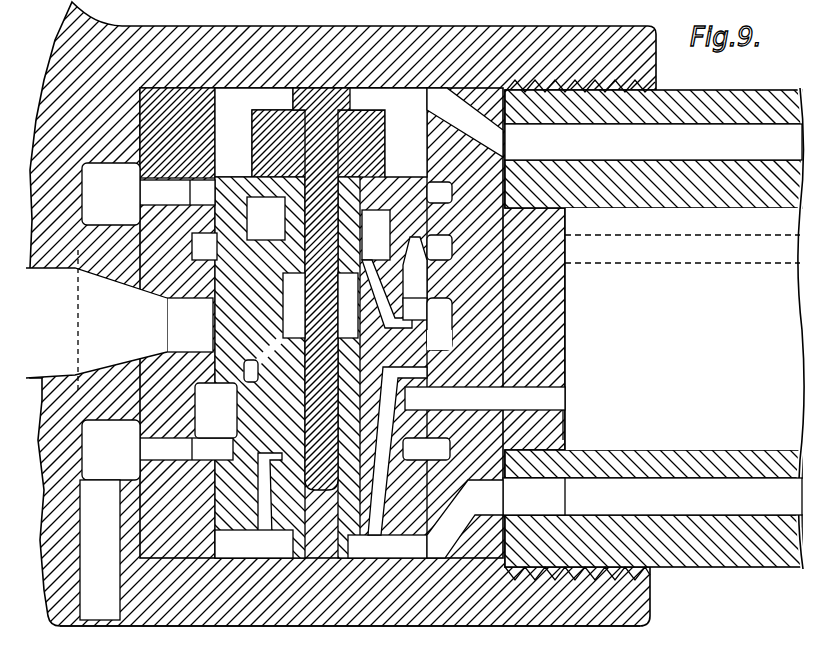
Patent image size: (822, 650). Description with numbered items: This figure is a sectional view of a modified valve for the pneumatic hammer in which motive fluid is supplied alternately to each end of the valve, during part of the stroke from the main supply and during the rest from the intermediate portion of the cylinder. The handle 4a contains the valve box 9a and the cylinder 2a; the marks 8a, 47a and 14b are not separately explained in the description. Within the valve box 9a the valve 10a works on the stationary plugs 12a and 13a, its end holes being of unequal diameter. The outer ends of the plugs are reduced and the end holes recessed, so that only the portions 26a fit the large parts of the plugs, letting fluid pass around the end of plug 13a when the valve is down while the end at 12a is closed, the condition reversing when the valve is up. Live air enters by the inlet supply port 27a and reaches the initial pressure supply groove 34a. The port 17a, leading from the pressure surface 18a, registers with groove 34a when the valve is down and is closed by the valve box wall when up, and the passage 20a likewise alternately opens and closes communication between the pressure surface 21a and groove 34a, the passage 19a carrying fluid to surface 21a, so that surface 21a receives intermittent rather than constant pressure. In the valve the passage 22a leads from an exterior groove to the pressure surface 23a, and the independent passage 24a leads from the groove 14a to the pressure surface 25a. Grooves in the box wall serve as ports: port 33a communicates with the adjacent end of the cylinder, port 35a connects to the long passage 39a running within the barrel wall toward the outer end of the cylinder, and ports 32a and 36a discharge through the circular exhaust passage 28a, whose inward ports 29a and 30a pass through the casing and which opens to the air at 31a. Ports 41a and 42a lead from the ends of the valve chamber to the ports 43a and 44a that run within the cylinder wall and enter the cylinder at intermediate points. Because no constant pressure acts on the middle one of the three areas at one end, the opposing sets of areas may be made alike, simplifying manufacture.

The handle 4a is at (56, 52).
The threaded coupling 8a is at (646, 58).
The cylinder 2a is at (716, 452).
The port 44a is at (653, 142).
The port 43a is at (653, 496).
The long passage 39a is at (757, 250).
The valve box 9a is at (204, 122).
The stationary plug 12a is at (276, 114).
The passage 24a is at (240, 326).
The passage 22a is at (250, 380).
The stationary plug 13a is at (320, 535).
The pressure surface 18a is at (302, 267).
The portions of valve end holes 26a is at (398, 158).
The port 36a is at (436, 190).
The port 42a is at (465, 122).
The port 35a is at (440, 251).
The groove 14a is at (415, 281).
The valve pressure surface 23a is at (354, 298).
The port 17a is at (395, 316).
The initial pressure supply groove 34a is at (437, 338).
The passage 20a is at (423, 371).
The port 33a is at (437, 401).
The port 32a is at (565, 420).
The lower pocket 47a is at (448, 446).
The port 41a is at (494, 511).
The passage 19a is at (430, 445).
The valve 10a is at (251, 518).
The pressure surface 21a is at (254, 495).
The pressure surface 25a is at (188, 421).
The port 29a is at (178, 220).
The circular exhaust passage 28a is at (111, 194).
The port 30a is at (111, 450).
The exhaust opening 31a is at (100, 550).
The inlet supply port 27a is at (96, 321).
The bottom member 14b is at (325, 638).